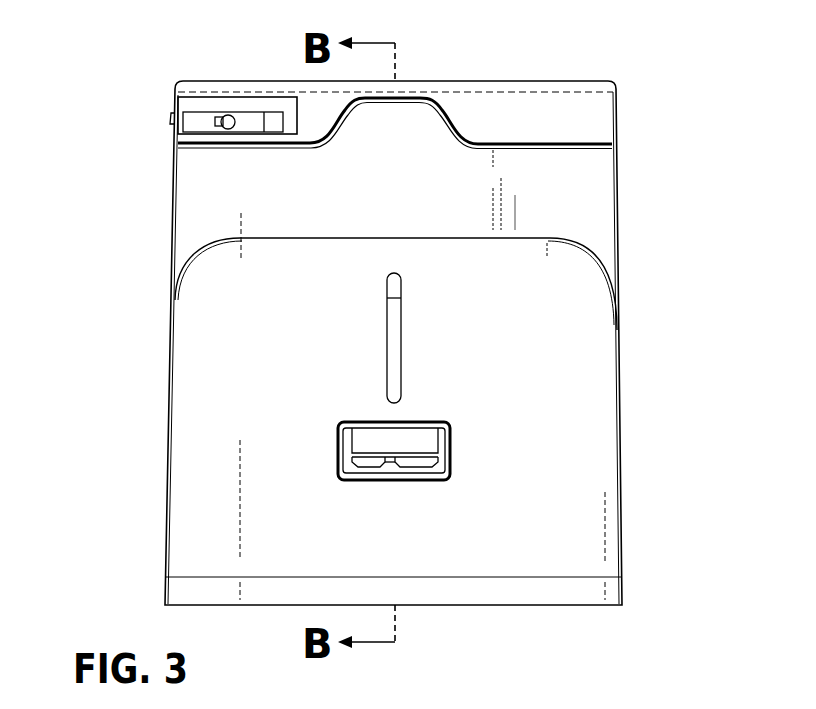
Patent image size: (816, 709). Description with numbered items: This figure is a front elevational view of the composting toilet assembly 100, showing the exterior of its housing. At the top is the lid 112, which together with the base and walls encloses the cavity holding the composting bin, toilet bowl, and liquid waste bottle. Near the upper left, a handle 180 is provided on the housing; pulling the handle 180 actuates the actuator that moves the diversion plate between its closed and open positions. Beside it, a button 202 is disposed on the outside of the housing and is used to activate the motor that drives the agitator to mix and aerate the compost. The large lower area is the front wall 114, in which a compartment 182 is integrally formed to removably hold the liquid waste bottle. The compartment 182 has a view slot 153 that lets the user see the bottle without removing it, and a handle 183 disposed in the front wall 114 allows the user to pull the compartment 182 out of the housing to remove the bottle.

The composting toilet assembly 100 is at (667, 94).
The lid 112 is at (255, 86).
The front wall 114 is at (583, 405).
The view slot 153 is at (403, 318).
The handle 180 is at (193, 124).
The compartment 182 is at (466, 336).
The handle 183 is at (439, 430).
The button 202 is at (170, 118).